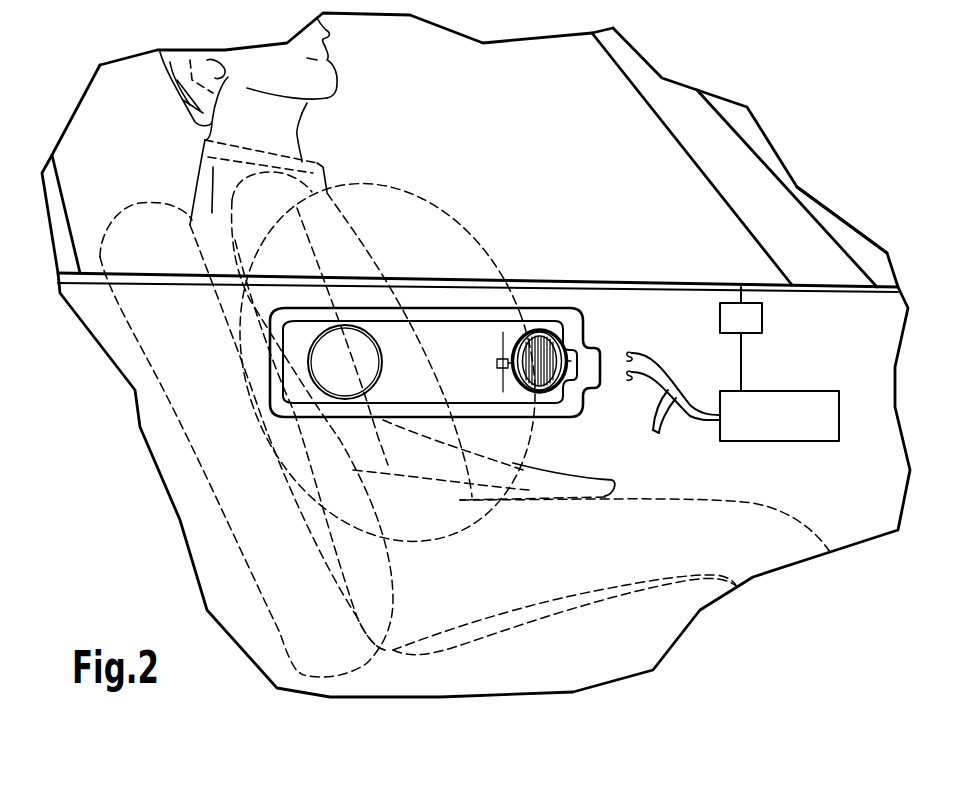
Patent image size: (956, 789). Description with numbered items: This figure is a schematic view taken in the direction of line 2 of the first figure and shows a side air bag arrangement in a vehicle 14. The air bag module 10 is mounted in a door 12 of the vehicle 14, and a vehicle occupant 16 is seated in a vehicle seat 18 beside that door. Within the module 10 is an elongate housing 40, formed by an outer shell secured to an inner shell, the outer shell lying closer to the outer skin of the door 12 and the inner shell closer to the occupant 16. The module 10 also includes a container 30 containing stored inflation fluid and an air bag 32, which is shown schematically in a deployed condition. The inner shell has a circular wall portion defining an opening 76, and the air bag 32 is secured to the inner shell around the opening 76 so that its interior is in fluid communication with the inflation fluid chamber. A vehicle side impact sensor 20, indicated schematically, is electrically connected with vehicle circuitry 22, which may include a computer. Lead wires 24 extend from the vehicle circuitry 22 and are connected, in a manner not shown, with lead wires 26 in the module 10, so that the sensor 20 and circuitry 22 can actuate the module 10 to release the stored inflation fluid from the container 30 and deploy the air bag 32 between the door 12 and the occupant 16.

The line 2— 2 is at (775, 0).
The air bag module 10 is at (453, 308).
The door 12 is at (748, 143).
The vehicle 14 is at (820, 225).
The vehicle occupant 16 is at (333, 97).
The vehicle seat 18 is at (130, 208).
The vehicle side impact sensor 20 is at (740, 287).
The vehicle circuitry 22 is at (793, 391).
The lead wires 24 is at (673, 408).
The lead wires 26 is at (493, 353).
The container 30 is at (537, 365).
The air bag 32 is at (397, 187).
The elongate housing 40 is at (537, 365).
The opening 76 is at (313, 342).